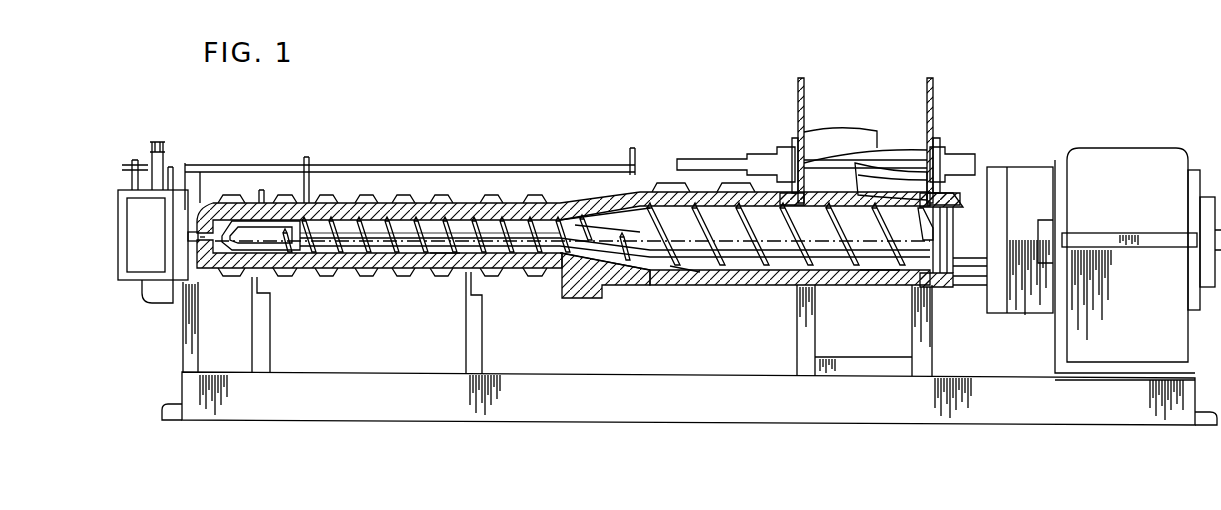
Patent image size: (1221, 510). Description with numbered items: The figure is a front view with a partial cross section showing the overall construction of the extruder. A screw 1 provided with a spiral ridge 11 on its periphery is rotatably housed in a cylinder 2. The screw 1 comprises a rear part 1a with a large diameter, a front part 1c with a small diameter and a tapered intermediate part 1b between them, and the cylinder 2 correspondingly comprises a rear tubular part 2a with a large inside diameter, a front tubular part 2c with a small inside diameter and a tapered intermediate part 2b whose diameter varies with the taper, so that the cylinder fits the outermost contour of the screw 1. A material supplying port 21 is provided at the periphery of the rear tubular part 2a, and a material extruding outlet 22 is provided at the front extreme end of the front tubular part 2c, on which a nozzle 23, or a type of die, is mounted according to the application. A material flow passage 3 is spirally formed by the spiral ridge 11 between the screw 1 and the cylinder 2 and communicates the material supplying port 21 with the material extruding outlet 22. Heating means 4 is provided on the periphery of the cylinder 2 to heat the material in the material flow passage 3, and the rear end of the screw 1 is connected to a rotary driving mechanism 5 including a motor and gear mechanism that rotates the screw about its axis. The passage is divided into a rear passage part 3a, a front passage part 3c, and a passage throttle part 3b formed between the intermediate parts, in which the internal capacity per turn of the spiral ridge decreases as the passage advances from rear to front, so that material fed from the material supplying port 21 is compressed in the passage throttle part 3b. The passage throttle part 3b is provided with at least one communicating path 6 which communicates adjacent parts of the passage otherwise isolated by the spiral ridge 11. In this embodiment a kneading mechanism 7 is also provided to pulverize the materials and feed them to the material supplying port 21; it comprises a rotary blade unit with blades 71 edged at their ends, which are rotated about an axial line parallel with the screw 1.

The screw 1 is at (377, 232).
The rear part 1a is at (772, 248).
The tapered intermediate part 1b is at (645, 247).
The front part 1c is at (407, 245).
The cylinder 2 is at (423, 218).
The rear tubular part 2a is at (787, 277).
The tapered intermediate part 2b is at (619, 274).
The front tubular part 2c is at (348, 262).
The material flow passage 3 is at (518, 223).
The rear passage part 3a is at (878, 268).
The passage throttle part 3b is at (686, 264).
The front passage part 3c is at (443, 254).
The heating means 4 is at (448, 202).
The rotary driving mechanism 5 is at (1172, 163).
The communicating path 6 is at (597, 235).
The kneading mechanism 7 is at (903, 130).
The rotary blades 71 is at (852, 133).
The spiral ridge 11 is at (335, 225).
The material supplying port 21 is at (818, 202).
The material extruding outlet 22 is at (202, 237).
The nozzle 23 is at (161, 306).